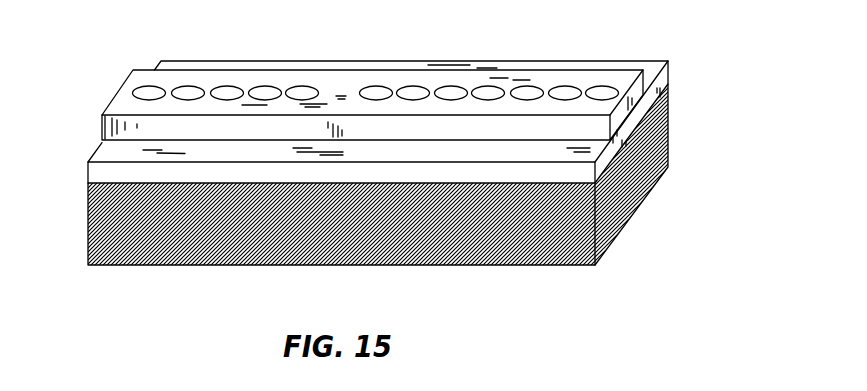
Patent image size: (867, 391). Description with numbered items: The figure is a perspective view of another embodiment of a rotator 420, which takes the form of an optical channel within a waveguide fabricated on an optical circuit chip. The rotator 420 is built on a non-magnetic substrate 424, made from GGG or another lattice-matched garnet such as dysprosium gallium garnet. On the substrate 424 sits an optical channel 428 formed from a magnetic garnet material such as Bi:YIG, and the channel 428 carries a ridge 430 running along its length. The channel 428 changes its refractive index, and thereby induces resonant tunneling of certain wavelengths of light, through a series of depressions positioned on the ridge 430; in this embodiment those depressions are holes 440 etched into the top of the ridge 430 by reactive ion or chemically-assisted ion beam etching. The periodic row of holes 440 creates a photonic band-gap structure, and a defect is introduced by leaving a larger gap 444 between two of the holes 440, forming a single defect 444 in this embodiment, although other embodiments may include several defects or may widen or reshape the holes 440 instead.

The rotator 420 is at (118, 308).
The non-magnetic substrate 424 is at (640, 195).
The optical channel 428 is at (648, 104).
The ridge 430 is at (638, 84).
The holes 440 is at (298, 86).
The gap or defect 444 is at (337, 88).